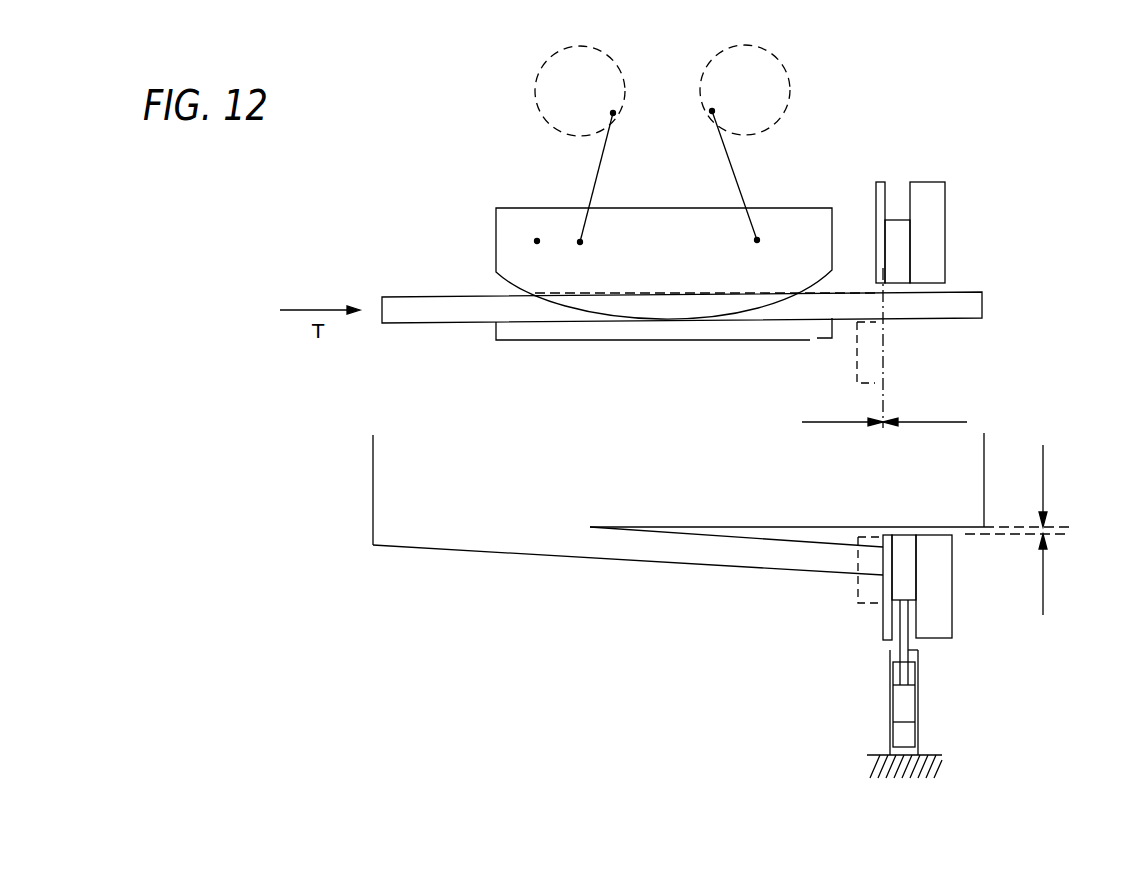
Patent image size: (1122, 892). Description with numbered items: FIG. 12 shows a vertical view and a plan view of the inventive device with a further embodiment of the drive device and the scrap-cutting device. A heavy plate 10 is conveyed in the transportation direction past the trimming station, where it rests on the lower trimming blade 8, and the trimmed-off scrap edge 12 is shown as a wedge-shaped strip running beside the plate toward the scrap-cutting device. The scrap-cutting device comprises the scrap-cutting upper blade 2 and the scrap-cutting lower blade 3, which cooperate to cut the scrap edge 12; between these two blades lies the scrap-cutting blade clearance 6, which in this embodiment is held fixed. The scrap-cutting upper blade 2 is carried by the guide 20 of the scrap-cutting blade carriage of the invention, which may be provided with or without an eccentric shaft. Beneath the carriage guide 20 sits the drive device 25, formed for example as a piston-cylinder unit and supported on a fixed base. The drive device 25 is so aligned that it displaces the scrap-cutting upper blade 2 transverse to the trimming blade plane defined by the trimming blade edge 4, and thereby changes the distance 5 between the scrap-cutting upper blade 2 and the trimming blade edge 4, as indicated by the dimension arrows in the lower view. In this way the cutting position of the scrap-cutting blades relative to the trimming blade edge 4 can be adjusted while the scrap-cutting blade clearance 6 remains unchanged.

The scrap-cutting upper blade 2 is at (897, 220).
The scrap-cutting lower blade 3 is at (855, 358).
The trimming blade edge 4 is at (987, 525).
The distance between the scrap-cutting upper blade and the trimming blade edge 5 is at (1065, 530).
The scrap-cutting blade clearance 6 is at (537, 241).
The lower trimming blade 8 is at (588, 342).
The heavy plate 10 is at (412, 303).
The scrap edge 12 is at (765, 557).
The guide of scrap-cutting blade carriage of the invention with or without eccentric 20 is at (931, 195).
The drive device 25 is at (918, 695).